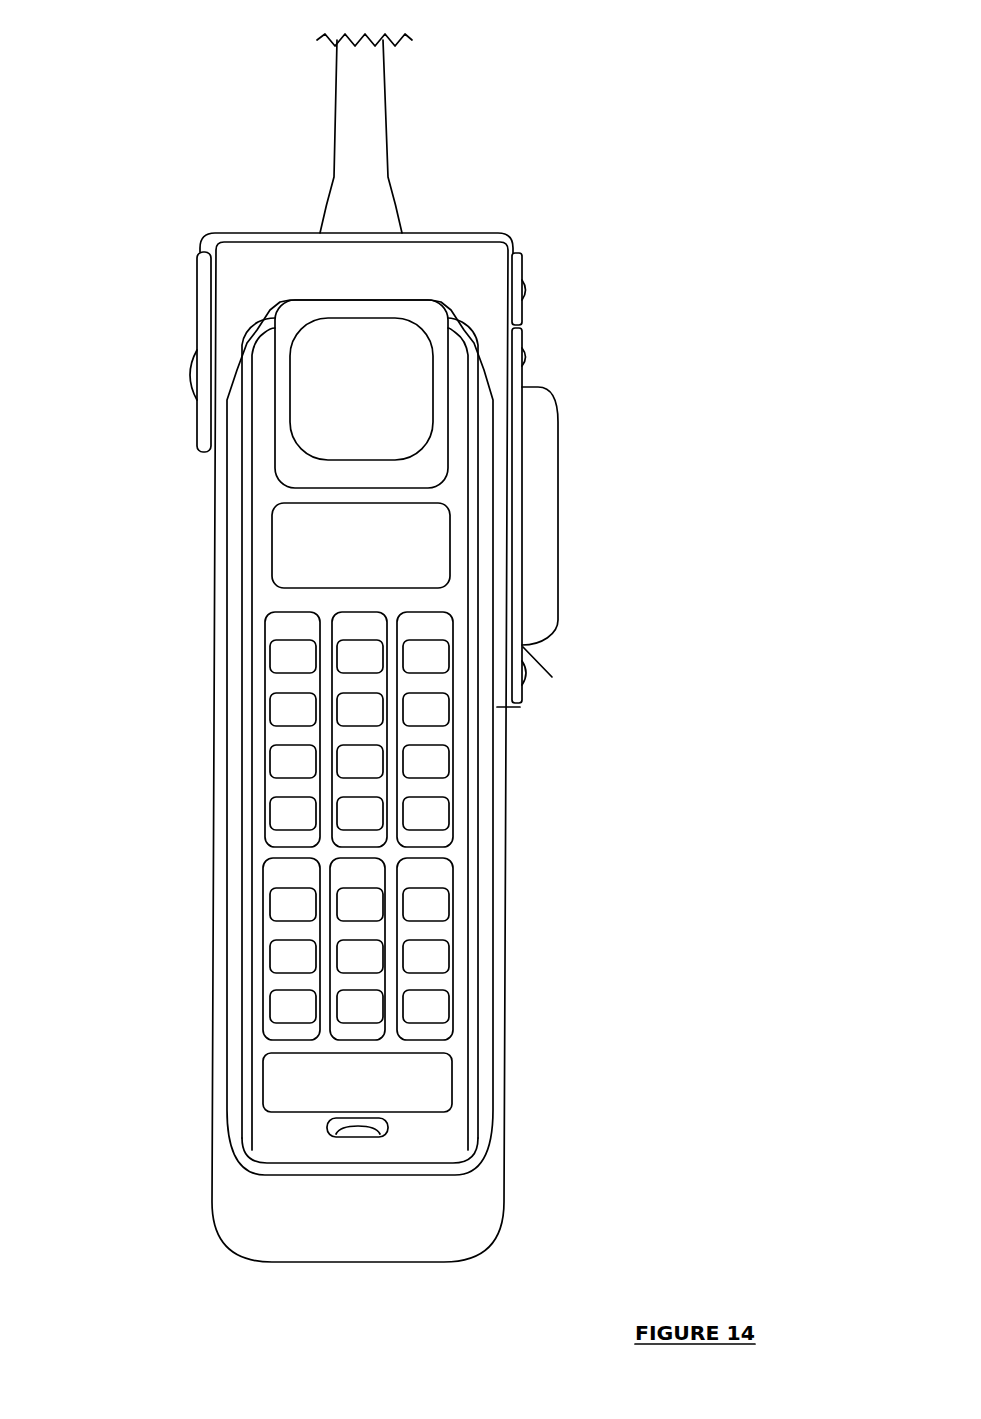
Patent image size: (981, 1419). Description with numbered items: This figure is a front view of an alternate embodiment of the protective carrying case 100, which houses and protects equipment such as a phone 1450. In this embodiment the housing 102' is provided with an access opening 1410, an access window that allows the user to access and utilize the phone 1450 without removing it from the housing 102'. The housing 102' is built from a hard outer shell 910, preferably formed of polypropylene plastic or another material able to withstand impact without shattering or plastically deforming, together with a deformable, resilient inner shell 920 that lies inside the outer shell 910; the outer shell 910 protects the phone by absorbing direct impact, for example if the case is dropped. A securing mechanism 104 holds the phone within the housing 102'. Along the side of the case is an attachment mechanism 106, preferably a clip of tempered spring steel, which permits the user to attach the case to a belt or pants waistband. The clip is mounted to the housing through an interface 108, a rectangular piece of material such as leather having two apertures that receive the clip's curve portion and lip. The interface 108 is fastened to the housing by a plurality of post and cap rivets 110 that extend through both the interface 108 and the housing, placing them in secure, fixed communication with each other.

The protective carrying case 100 is at (168, 155).
The housing 102' is at (480, 752).
The securing mechanism 104 is at (187, 362).
The attachment mechanism 106 is at (560, 547).
The interface 108 is at (520, 708).
The post and cap rivets 110 is at (525, 357).
The outer shell 910 is at (498, 1072).
The inner shell 920 is at (483, 1053).
The access opening 1410 is at (393, 300).
The phone 1450 is at (273, 492).